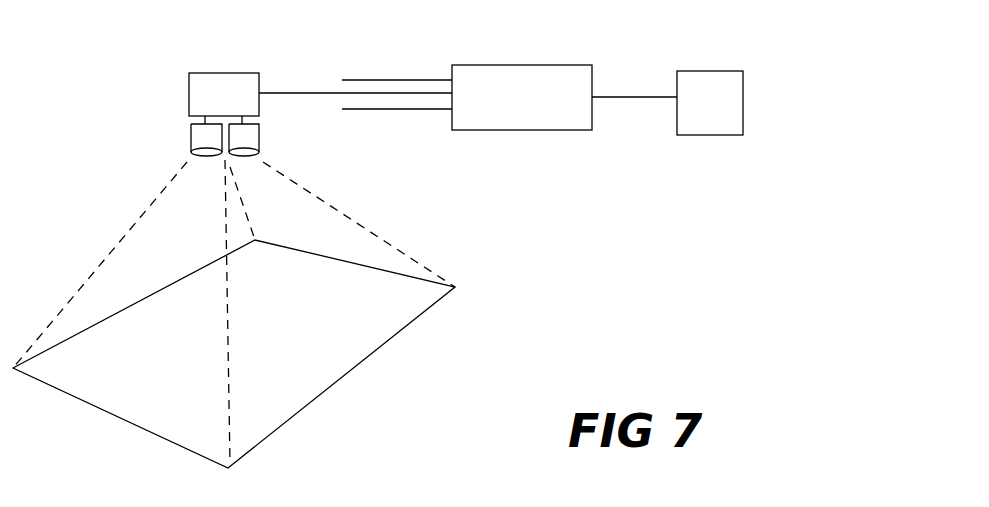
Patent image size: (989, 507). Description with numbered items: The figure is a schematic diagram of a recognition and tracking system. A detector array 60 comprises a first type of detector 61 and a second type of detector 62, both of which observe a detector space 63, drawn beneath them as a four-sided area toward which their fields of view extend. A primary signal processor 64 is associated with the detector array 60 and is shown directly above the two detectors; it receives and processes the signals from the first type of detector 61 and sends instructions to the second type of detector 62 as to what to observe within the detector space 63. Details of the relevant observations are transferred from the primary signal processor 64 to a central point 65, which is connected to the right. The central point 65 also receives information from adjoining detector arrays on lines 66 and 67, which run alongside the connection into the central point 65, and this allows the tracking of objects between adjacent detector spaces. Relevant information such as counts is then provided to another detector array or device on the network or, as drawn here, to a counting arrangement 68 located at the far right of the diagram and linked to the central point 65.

The detector array 60 is at (397, 237).
The first type of detector 61 is at (207, 137).
The second type of detector 62 is at (259, 143).
The detector space 63 is at (263, 397).
The primary signal processor 64 is at (222, 91).
The central point 65 is at (526, 88).
The line 66 is at (377, 112).
The line 67 is at (381, 79).
The counting arrangement 68 is at (703, 93).